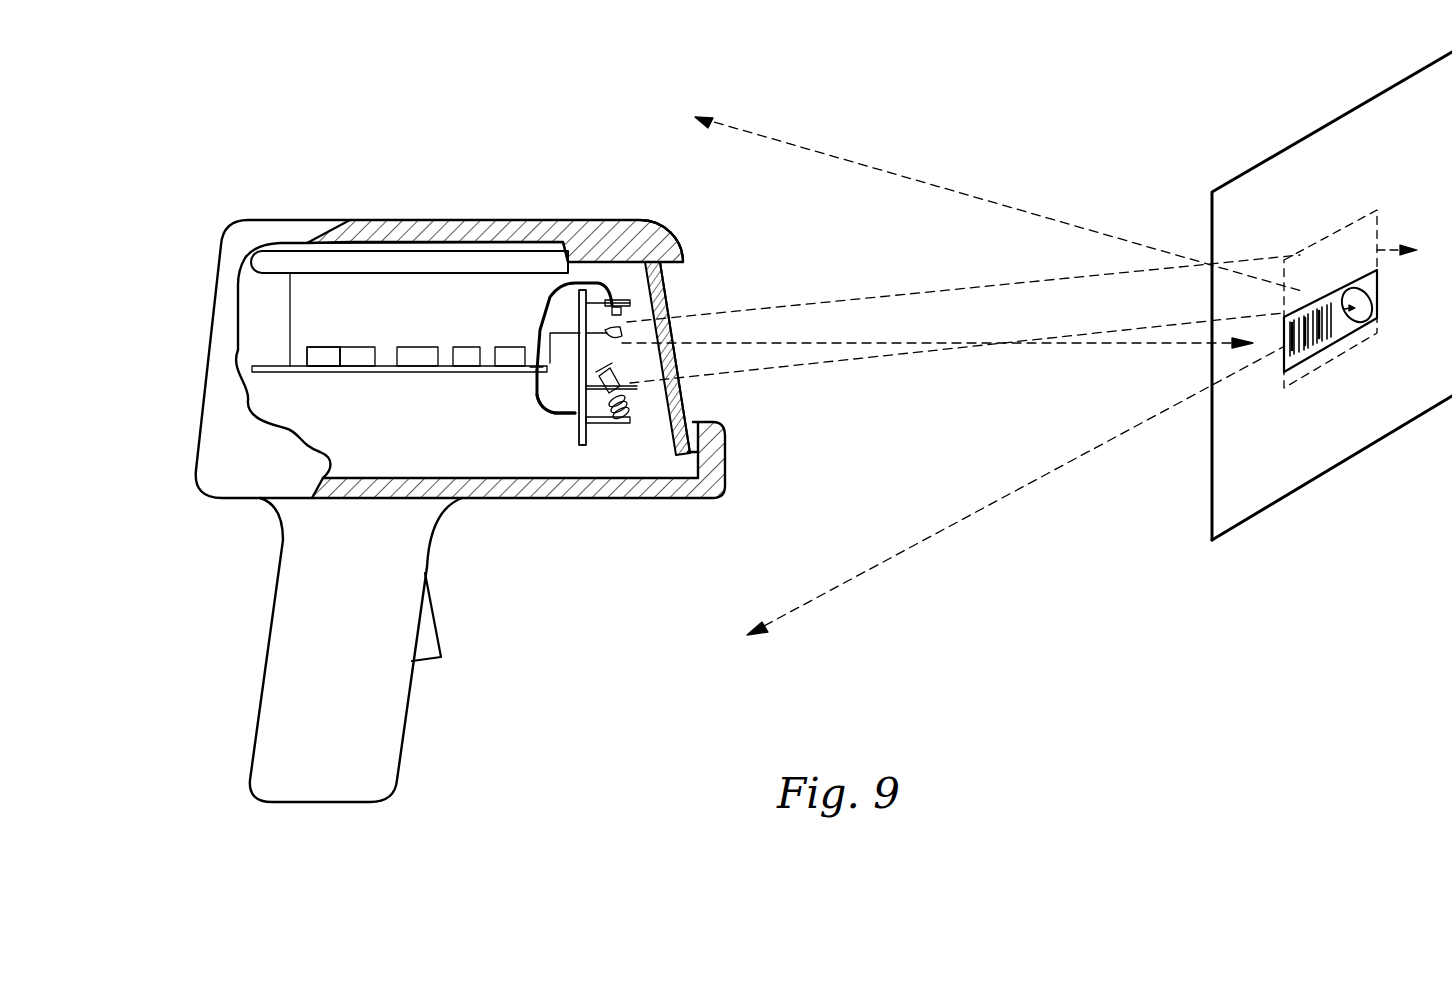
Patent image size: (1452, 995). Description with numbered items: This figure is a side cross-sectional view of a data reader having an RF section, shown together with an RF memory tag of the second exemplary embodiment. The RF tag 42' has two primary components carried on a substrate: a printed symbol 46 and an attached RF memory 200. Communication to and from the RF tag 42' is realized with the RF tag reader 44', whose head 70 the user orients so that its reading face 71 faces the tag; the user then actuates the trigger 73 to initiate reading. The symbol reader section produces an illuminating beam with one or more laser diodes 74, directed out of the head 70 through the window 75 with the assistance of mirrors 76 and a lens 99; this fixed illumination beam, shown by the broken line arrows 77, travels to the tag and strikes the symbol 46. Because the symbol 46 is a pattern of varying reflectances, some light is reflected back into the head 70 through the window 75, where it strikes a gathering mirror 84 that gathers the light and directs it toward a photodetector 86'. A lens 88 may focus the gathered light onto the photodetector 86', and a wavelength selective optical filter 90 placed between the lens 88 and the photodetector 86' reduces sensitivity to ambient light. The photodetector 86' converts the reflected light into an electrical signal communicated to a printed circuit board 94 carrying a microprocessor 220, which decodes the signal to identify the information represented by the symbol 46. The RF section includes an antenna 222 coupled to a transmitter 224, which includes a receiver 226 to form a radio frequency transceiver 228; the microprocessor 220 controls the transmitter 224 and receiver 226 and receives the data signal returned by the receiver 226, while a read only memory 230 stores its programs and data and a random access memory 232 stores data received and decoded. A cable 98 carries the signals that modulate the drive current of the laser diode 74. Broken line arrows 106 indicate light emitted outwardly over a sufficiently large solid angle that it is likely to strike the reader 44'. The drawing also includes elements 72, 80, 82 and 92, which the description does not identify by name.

The RF tag reader 44' is at (440, 419).
The head 70 is at (443, 220).
The antenna 222 is at (347, 250).
The handle 72 is at (281, 650).
The trigger 73 is at (433, 637).
The printed circuit board 94 is at (413, 373).
The radio frequency transceiver 228 is at (313, 338).
The transmitter 224 is at (322, 345).
The receiver 226 is at (367, 345).
The microprocessor 220 is at (410, 345).
The read only memory (ROM) 230 is at (460, 345).
The random access memory (RAM) 232 is at (502, 345).
The cable 98 is at (543, 300).
The optics module 92 is at (538, 412).
The gathering mirror 84 is at (582, 418).
The scan engine 80 is at (583, 445).
The detector 82 is at (608, 300).
The lens 99 is at (638, 327).
The photodetector 86' is at (622, 417).
The lens 88 is at (609, 406).
The laser diode 74 is at (665, 282).
The window 75 is at (682, 260).
The reading face 71 is at (712, 297).
The mirror 76 is at (665, 352).
The wavelength selective optical filter 90 is at (668, 384).
The broken line arrows 106 is at (803, 150).
The broken line arrows 77 is at (1123, 275).
The RF tag 42' is at (1330, 358).
The symbol 46 is at (1313, 310).
The RF memory 200 is at (1357, 289).